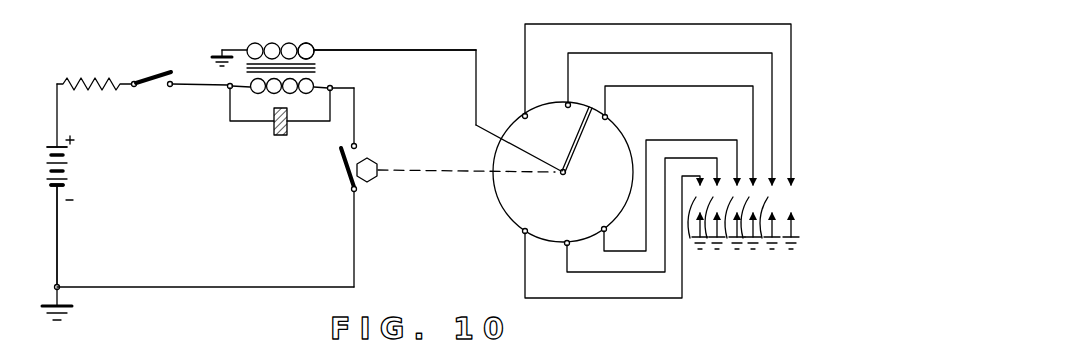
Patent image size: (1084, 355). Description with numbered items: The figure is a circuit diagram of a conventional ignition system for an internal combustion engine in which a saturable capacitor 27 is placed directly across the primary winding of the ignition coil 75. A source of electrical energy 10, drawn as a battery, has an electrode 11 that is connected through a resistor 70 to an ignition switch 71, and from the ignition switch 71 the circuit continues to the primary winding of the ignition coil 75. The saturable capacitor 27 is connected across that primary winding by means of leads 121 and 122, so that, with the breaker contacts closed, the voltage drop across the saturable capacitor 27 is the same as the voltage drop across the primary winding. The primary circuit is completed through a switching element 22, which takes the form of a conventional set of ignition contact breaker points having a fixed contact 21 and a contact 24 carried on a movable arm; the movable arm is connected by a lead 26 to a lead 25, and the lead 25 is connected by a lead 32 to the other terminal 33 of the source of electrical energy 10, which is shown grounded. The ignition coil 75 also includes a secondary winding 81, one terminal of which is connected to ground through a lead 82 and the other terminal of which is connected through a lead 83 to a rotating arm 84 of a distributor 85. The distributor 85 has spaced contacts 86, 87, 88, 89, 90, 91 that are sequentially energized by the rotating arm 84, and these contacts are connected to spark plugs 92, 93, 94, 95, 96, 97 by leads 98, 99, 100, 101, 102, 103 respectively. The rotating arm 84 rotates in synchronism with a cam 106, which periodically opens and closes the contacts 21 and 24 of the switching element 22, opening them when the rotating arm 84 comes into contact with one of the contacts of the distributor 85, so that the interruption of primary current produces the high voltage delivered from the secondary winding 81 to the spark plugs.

The source of electrical energy 10 is at (80, 176).
The electrode 11 is at (55, 146).
The contact 21 is at (357, 145).
The switching element 22 is at (348, 183).
The contact 24 is at (342, 152).
The lead 25 is at (162, 288).
The lead 26 is at (356, 256).
The saturable capacitor 27 is at (278, 136).
The lead 32 is at (56, 271).
The terminal 33 is at (55, 188).
The resistor 70 is at (99, 78).
The ignition switch 71 is at (156, 72).
The ignition coil 75 is at (282, 42).
The secondary winding 81 is at (304, 52).
The lead 82 is at (238, 48).
The lead 83 is at (410, 45).
The rotating arm 84 is at (575, 150).
The distributor 85 is at (497, 202).
The contact 86 is at (528, 114).
The contact 87 is at (582, 94).
The contact 88 is at (608, 116).
The contact 89 is at (607, 229).
The contact 90 is at (569, 241).
The contact 91 is at (535, 220).
The spark plug 92 is at (792, 203).
The spark plug 93 is at (762, 238).
The spark plug 94 is at (743, 238).
The spark plug 95 is at (737, 236).
The spark plug 96 is at (707, 238).
The spark plug 97 is at (700, 236).
The lead 98 is at (750, 26).
The lead 99 is at (720, 55).
The lead 100 is at (700, 88).
The lead 101 is at (710, 130).
The lead 102 is at (608, 273).
The lead 103 is at (597, 299).
The cam 106 is at (372, 178).
The lead 121 is at (242, 123).
The lead 122 is at (297, 123).